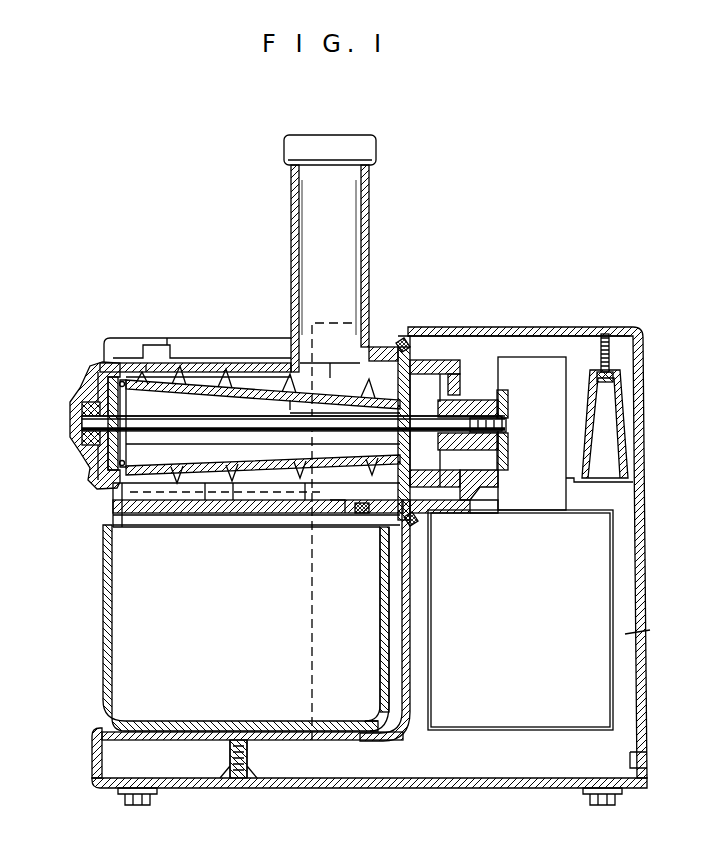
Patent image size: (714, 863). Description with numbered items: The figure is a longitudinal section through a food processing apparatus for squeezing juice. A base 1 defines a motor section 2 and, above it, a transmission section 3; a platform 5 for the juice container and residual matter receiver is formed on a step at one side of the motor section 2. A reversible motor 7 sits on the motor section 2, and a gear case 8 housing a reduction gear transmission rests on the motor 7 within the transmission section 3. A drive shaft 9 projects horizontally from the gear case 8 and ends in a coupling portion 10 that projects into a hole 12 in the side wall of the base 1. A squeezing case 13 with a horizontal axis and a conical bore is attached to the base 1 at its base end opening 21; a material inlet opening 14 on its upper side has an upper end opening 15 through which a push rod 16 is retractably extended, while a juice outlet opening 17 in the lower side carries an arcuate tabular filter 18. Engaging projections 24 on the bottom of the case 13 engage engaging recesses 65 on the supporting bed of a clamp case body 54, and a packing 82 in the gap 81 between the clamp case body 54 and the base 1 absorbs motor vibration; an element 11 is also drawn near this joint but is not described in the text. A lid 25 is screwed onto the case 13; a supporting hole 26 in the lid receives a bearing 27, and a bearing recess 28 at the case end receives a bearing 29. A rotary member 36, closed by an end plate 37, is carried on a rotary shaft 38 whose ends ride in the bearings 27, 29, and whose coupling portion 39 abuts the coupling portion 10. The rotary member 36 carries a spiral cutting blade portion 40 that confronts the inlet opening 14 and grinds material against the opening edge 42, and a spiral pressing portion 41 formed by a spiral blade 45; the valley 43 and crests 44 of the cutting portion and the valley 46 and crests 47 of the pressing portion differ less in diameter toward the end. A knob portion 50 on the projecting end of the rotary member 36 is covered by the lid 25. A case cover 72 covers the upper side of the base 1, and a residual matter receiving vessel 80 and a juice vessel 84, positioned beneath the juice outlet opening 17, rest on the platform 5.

The base 1 is at (648, 578).
The motor section 2 is at (638, 634).
The transmission section 3 is at (580, 437).
The platform 5 is at (300, 736).
The reversible motor 7 is at (522, 730).
The gear case 8 is at (540, 512).
The drive shaft 9 is at (500, 427).
The coupling portion 10 is at (506, 401).
The cover flange 11 is at (404, 342).
The hole 12 is at (472, 487).
The squeezing case 13 is at (268, 362).
The material inlet opening 14 is at (370, 212).
The upper end opening 15 is at (328, 165).
The push rod 16 is at (358, 252).
The juice outlet opening 17 is at (275, 500).
The arcuate tabular filter 18 is at (233, 500).
The base end opening 21 is at (395, 556).
The engaging projections 24 is at (305, 500).
The lid 25 is at (378, 346).
The supporting hole 26 is at (440, 402).
The bearing 27 is at (458, 500).
The bearing recess 28 is at (80, 428).
The bearing 29 is at (95, 448).
The rotary member 36 is at (240, 385).
The end plate 37 is at (106, 396).
The rotary shaft 38 is at (196, 433).
The coupling portion 39 is at (500, 446).
The spiral cutting blade portion 40 is at (374, 467).
The spiral pressing portion 41 is at (205, 500).
The opening edge 42 is at (305, 343).
The valley 43 is at (325, 388).
The crests 44 is at (362, 513).
The spiral blade 45 is at (248, 393).
The valley 46 is at (197, 380).
The crests 47 is at (146, 363).
The knob portion 50 is at (452, 374).
The clamp case body 54 is at (488, 498).
The engaging recesses 65 is at (340, 512).
The case cover 72 is at (573, 336).
The residual matter receiving vessel 80 is at (118, 338).
The gap 81 is at (401, 344).
The packing 82 is at (410, 350).
The juice vessel 84 is at (120, 648).